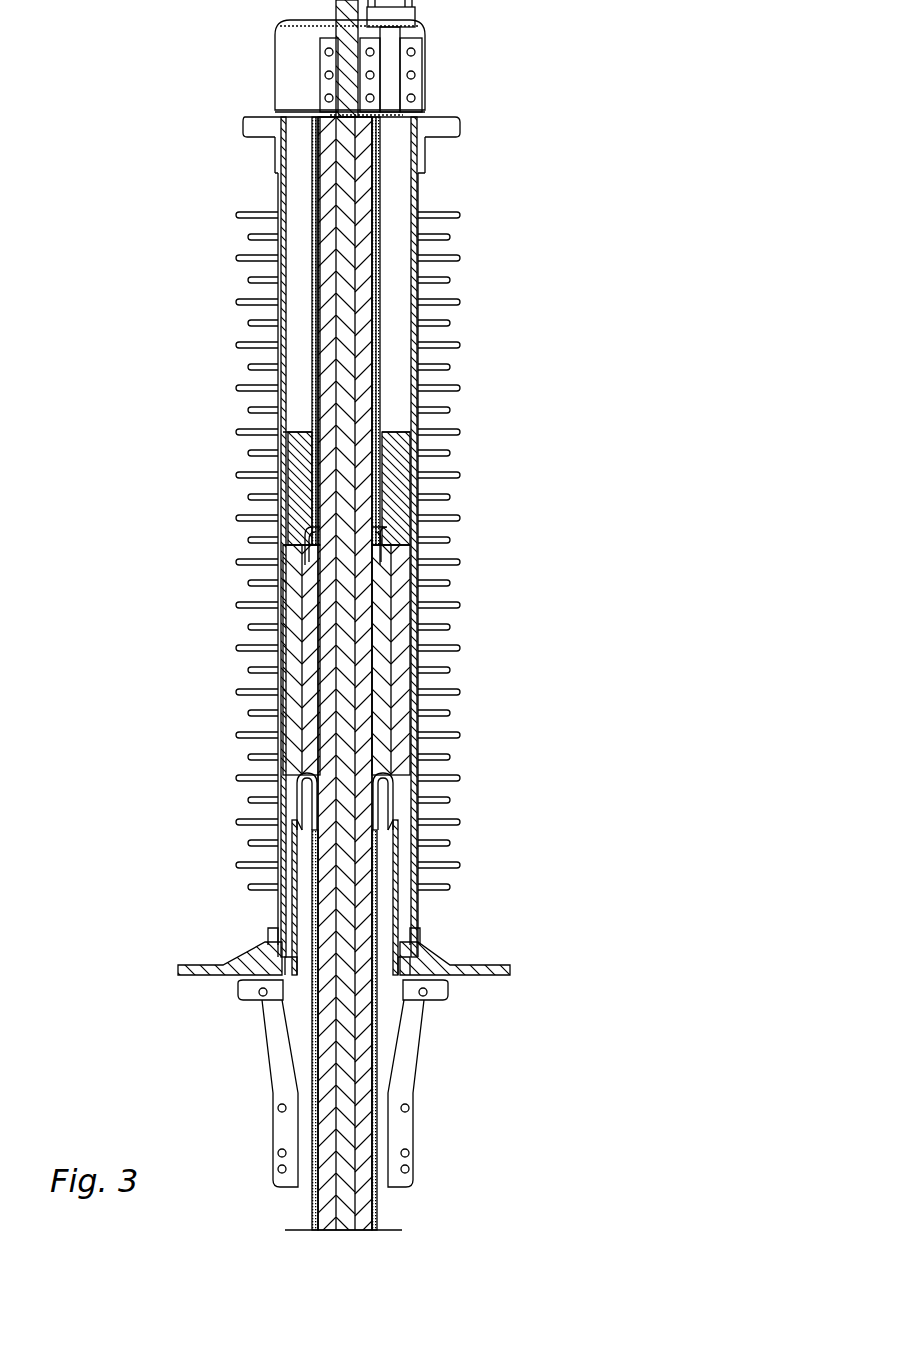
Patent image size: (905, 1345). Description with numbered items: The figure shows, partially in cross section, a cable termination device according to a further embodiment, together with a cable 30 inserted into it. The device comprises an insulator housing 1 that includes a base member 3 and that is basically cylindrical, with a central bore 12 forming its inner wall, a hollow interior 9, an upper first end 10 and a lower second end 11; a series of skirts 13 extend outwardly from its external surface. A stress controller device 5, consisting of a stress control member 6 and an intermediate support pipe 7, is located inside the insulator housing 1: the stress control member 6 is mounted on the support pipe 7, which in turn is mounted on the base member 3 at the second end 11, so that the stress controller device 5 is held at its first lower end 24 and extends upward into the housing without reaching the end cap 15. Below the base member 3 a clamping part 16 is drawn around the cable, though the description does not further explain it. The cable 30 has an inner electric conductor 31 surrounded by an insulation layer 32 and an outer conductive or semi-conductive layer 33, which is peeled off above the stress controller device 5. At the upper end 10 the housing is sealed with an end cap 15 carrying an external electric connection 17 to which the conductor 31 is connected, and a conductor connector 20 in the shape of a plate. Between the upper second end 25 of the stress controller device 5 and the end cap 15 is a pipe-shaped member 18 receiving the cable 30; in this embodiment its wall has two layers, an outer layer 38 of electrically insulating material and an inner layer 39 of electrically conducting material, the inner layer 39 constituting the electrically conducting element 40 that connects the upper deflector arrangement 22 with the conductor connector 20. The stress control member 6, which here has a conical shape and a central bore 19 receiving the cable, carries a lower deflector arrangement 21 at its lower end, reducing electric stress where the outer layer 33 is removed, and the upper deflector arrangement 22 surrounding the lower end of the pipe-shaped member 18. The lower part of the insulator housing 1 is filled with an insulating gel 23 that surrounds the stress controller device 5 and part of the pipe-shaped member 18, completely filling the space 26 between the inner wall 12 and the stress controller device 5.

The insulator housing 1 is at (426, 193).
The base member 3 is at (449, 950).
The stress controller device 5 is at (402, 678).
The stress control member 6 is at (382, 720).
The intermediate support pipe 7 is at (400, 860).
The hollow interior 9 is at (398, 387).
The first end 10 is at (398, 160).
The second end 11 is at (406, 950).
The central bore 12 is at (410, 425).
The skirts 13 is at (462, 322).
The end cap 15 is at (434, 82).
The clamp 16 is at (248, 985).
The external electric connection 17 is at (428, 61).
The pipe-shaped member 18 is at (313, 258).
The central bore 19 is at (378, 634).
The conductor connector 20 is at (300, 112).
The lower deflector arrangement 21 is at (307, 825).
The upper deflector arrangement 22 is at (388, 558).
The insulating gel 23 is at (402, 592).
The first lower end 24 is at (280, 940).
The second end 25 is at (382, 522).
The space 26 is at (292, 690).
The cable 30 is at (316, 320).
The inner electric conductor 31 is at (345, 386).
The insulation layer 32 is at (332, 475).
The outer conductive or semi-conductive layer 33 is at (317, 893).
The outer layer 38 is at (380, 218).
The inner layer 39 is at (382, 228).
The electrically conducting element 40 is at (313, 208).